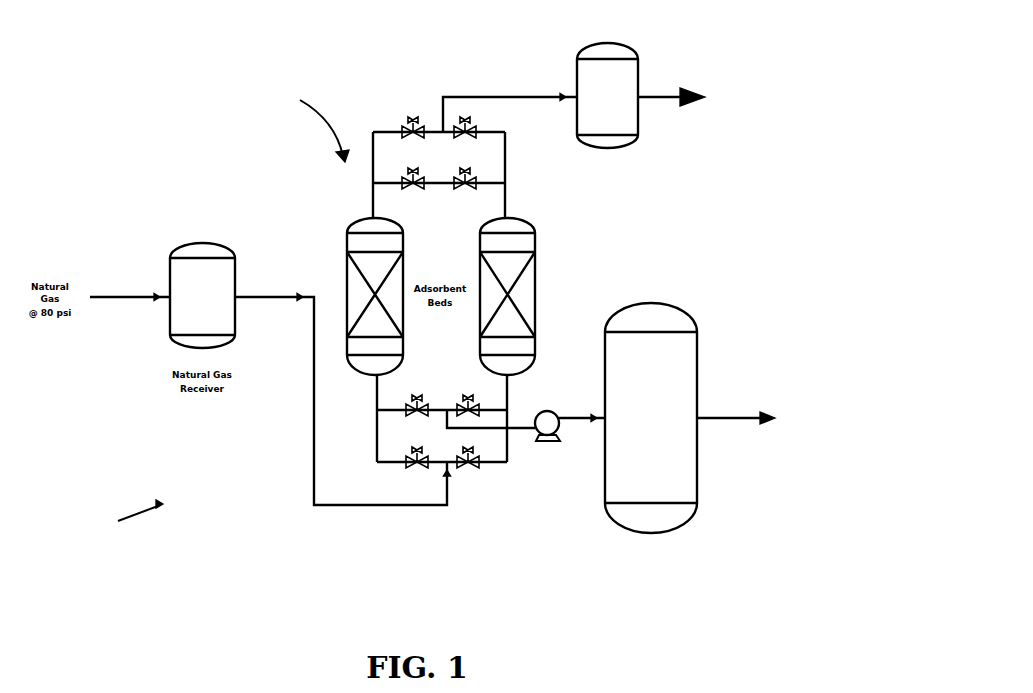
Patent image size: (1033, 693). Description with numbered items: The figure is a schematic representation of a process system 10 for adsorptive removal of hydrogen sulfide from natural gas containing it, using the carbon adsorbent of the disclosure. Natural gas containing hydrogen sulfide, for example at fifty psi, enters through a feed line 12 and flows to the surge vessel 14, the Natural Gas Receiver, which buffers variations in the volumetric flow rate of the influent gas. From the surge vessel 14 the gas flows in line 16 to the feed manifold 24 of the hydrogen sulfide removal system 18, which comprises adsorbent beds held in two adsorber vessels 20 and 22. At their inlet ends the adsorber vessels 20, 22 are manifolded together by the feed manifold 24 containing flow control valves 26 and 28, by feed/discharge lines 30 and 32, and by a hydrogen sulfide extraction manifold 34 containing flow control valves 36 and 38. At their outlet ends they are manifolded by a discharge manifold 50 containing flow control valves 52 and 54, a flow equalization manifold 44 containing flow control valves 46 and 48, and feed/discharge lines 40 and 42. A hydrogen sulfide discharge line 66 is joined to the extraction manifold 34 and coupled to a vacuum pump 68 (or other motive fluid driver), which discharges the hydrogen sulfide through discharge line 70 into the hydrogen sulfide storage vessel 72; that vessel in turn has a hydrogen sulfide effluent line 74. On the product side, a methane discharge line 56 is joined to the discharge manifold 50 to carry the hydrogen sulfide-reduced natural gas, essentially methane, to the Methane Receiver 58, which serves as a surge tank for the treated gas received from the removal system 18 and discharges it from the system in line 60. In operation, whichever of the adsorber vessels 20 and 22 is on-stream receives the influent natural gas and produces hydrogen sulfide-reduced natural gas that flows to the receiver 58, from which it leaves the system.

The process system 10 is at (125, 516).
The feed line 12 is at (128, 300).
The surge vessel 14 is at (182, 278).
The line 16 is at (310, 390).
The hydrogen sulfide removal system 18 is at (309, 117).
The adsorber vessel 20 is at (342, 282).
The adsorber vessel 22 is at (527, 292).
The feed manifold 24 is at (390, 467).
The flow control valve 26 is at (418, 456).
The flow control valve 28 is at (466, 454).
The feed/discharge line 30 is at (373, 432).
The feed/discharge line 32 is at (532, 380).
The hydrogen sulfide extraction manifold 34 is at (483, 408).
The flow control valve 36 is at (465, 403).
The flow control valve 38 is at (417, 398).
The feed/discharge line 40 is at (377, 196).
The feed/discharge line 42 is at (507, 203).
The flow equalization manifold 44 is at (480, 190).
The flow control valve 46 is at (410, 172).
The flow control valve 48 is at (470, 172).
The discharge manifold 50 is at (380, 132).
The flow control valve 52 is at (410, 116).
The flow control valve 54 is at (470, 123).
The methane discharge line 56 is at (478, 95).
The Methane Receiver 58 is at (585, 80).
The line 60 is at (665, 92).
The hydrogen sulfide discharge line 66 is at (515, 425).
The vacuum pump 68 is at (556, 432).
The discharge line 70 is at (578, 415).
The hydrogen sulfide storage vessel 72 is at (680, 367).
The hydrogen sulfide effluent line 74 is at (713, 420).